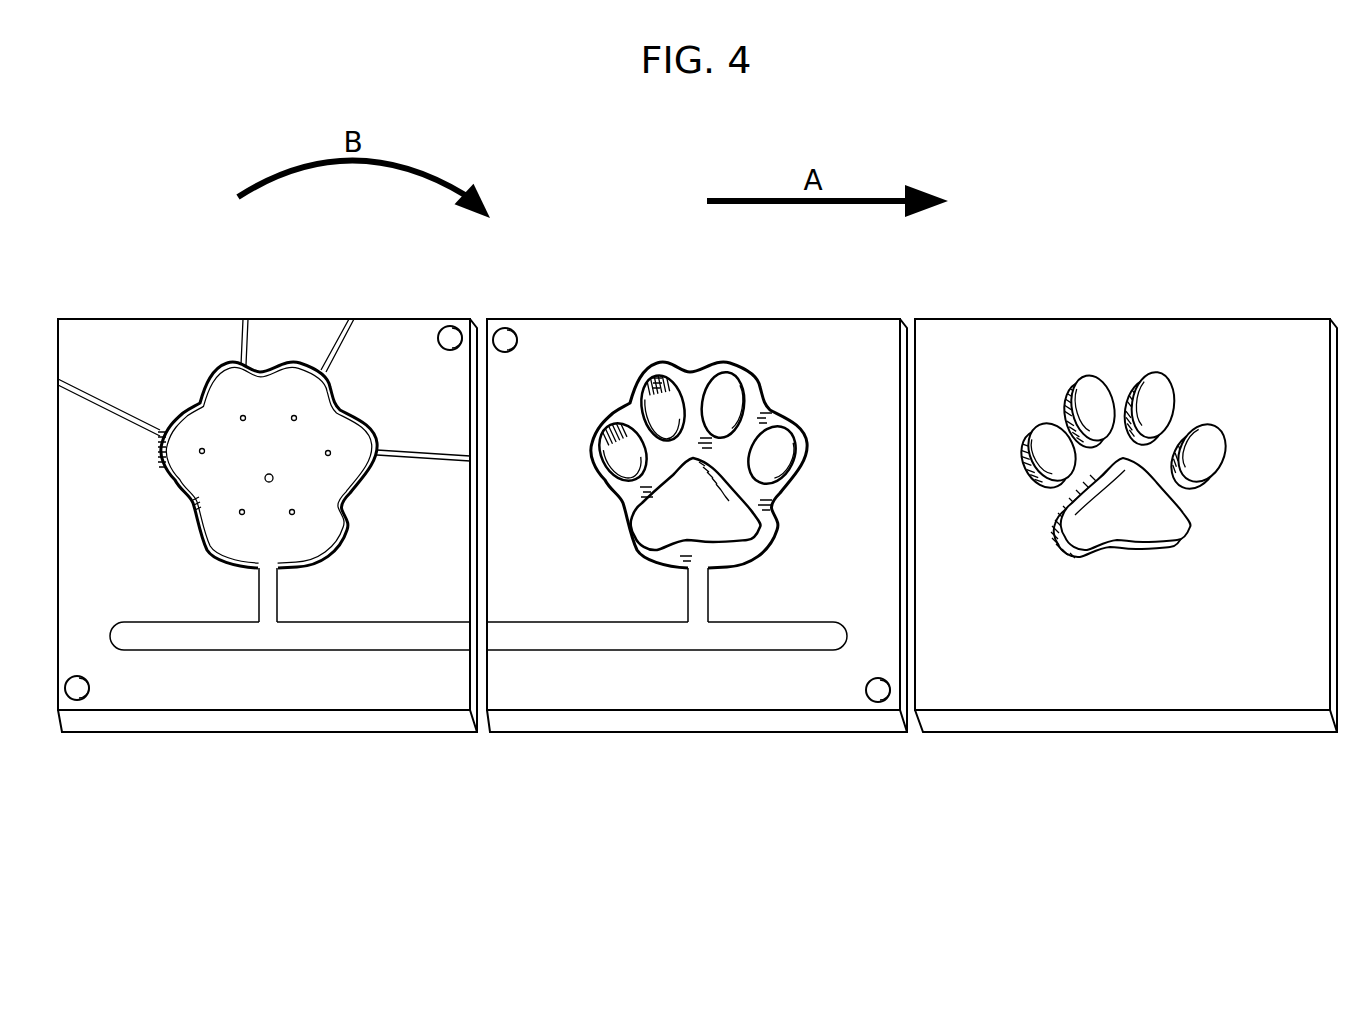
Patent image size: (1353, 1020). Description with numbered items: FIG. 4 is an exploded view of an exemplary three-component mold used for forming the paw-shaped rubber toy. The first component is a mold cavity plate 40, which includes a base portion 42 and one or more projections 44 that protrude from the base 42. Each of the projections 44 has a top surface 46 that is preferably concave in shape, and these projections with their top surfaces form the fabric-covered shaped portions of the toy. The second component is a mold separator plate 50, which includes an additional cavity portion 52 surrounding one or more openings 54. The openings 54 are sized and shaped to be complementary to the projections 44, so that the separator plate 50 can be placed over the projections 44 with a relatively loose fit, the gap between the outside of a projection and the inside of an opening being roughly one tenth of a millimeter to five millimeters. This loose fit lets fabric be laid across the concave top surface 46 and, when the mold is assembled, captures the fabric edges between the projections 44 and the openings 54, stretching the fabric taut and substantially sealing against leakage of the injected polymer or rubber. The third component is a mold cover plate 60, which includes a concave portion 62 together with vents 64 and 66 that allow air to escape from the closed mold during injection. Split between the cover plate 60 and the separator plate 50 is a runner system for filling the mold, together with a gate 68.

The mold cavity plate 40 is at (1128, 710).
The base portion 42 is at (1150, 424).
The projections 44 is at (1167, 377).
The top surface 46 is at (1223, 430).
The mold separator plate 50 is at (800, 710).
The cavity portion 52 is at (703, 370).
The openings 54 is at (672, 417).
The mold cover plate 60 is at (378, 712).
The concave portion 62 is at (235, 385).
The vent 64 is at (245, 330).
The vent 66 is at (294, 417).
The gate 68 is at (270, 572).